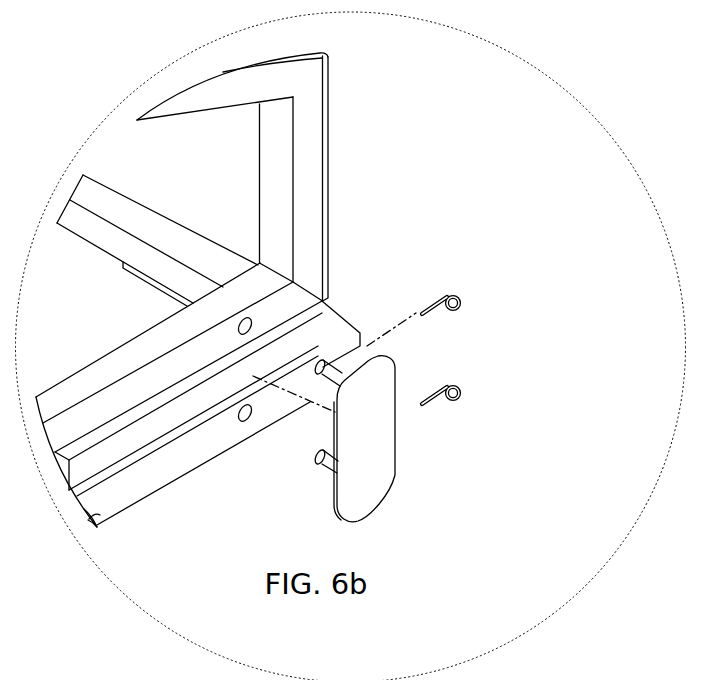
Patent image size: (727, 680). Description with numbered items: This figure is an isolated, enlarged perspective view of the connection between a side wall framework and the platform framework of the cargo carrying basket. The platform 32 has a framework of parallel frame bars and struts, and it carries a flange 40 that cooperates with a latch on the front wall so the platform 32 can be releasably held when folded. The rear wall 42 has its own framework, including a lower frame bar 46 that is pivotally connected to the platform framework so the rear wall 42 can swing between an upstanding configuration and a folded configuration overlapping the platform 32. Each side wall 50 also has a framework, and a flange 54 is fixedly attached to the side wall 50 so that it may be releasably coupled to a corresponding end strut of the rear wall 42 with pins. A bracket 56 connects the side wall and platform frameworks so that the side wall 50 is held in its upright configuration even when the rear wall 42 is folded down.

The platform 32 is at (212, 452).
The flange 40 is at (100, 515).
The rear wall 42 is at (239, 412).
The lower frame bar 46 is at (102, 243).
The side wall 50 is at (230, 88).
The flange 54 is at (331, 162).
The bracket 56 is at (396, 453).